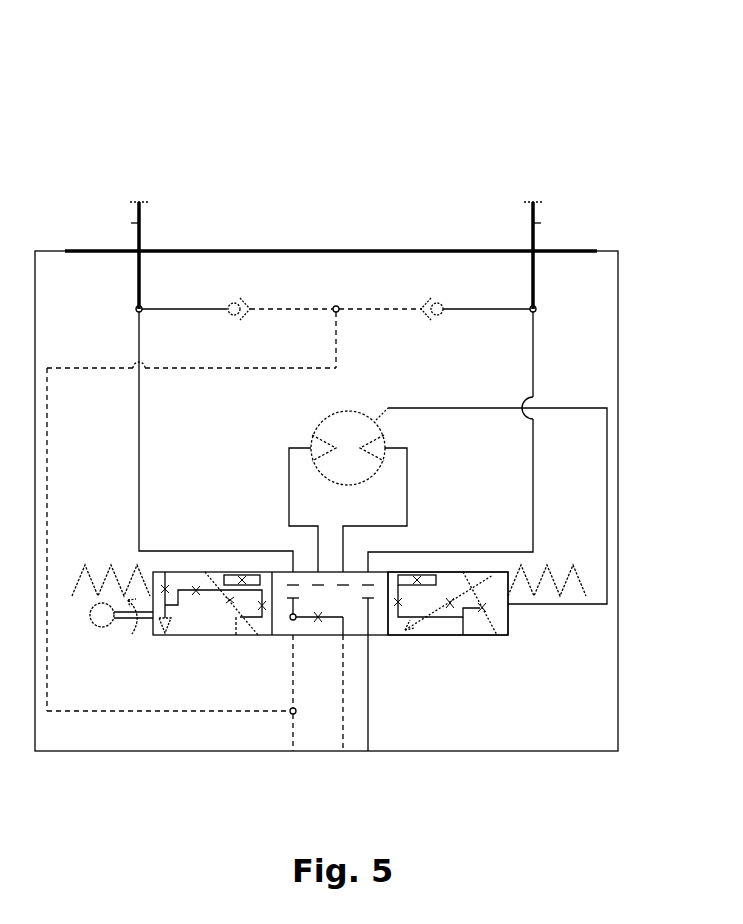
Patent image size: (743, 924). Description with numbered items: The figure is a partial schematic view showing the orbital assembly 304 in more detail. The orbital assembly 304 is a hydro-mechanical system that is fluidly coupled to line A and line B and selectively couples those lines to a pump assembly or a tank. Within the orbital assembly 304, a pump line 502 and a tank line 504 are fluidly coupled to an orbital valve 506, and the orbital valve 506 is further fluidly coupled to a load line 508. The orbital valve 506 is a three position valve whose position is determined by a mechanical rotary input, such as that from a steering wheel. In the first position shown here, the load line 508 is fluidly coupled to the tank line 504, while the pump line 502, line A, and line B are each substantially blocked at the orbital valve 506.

The orbital assembly 304 is at (333, 395).
The pump line 502 is at (370, 728).
The tank line 504 is at (289, 733).
The orbital valve 506 is at (500, 637).
The load line 508 is at (340, 705).
The line A is at (135, 223).
The line B is at (536, 223).